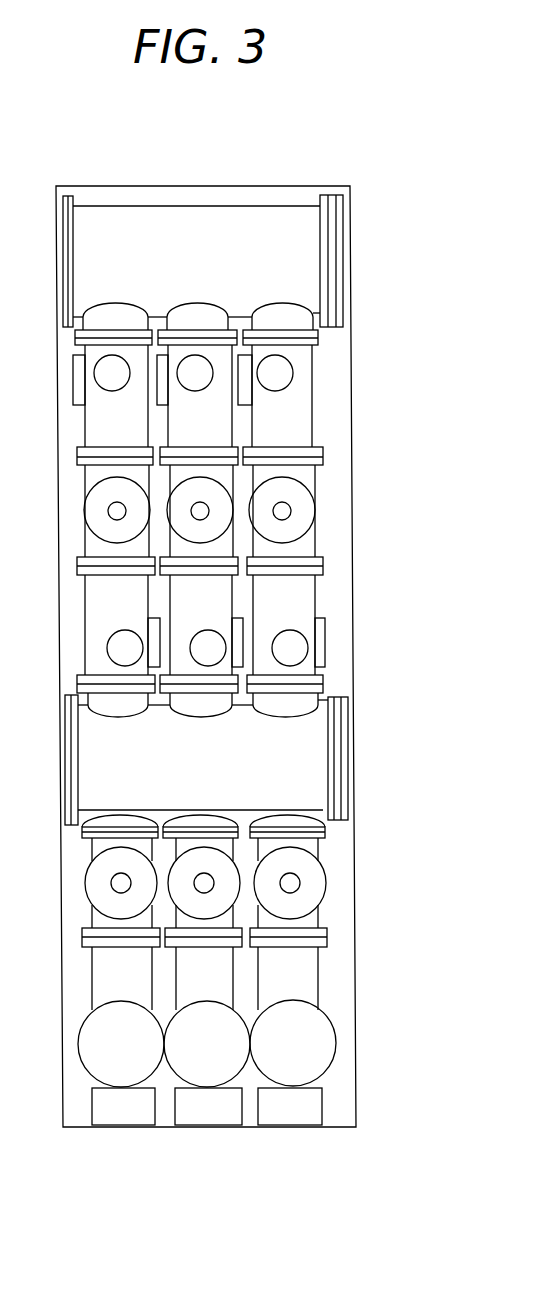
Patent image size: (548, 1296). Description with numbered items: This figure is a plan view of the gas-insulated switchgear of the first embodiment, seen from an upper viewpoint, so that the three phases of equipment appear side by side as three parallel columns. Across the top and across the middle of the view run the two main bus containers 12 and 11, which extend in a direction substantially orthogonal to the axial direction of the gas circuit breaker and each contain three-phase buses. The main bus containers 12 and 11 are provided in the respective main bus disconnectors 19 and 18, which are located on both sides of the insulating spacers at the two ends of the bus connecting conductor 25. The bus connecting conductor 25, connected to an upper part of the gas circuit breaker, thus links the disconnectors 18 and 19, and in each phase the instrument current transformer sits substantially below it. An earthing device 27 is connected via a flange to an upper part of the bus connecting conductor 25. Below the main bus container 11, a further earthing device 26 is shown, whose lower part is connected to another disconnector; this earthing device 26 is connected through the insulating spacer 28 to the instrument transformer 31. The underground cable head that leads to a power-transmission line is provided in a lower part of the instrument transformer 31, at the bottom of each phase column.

The main bus container 11 is at (305, 778).
The main bus container 12 is at (208, 222).
The main bus disconnector 18 is at (292, 648).
The main bus disconnector 19 is at (277, 373).
The bus connecting conductor 25 is at (307, 477).
The earthing device 26 is at (295, 881).
The earthing device 27 is at (290, 512).
The insulating spacer 28 is at (327, 931).
The instrument transformer 31 is at (323, 1048).